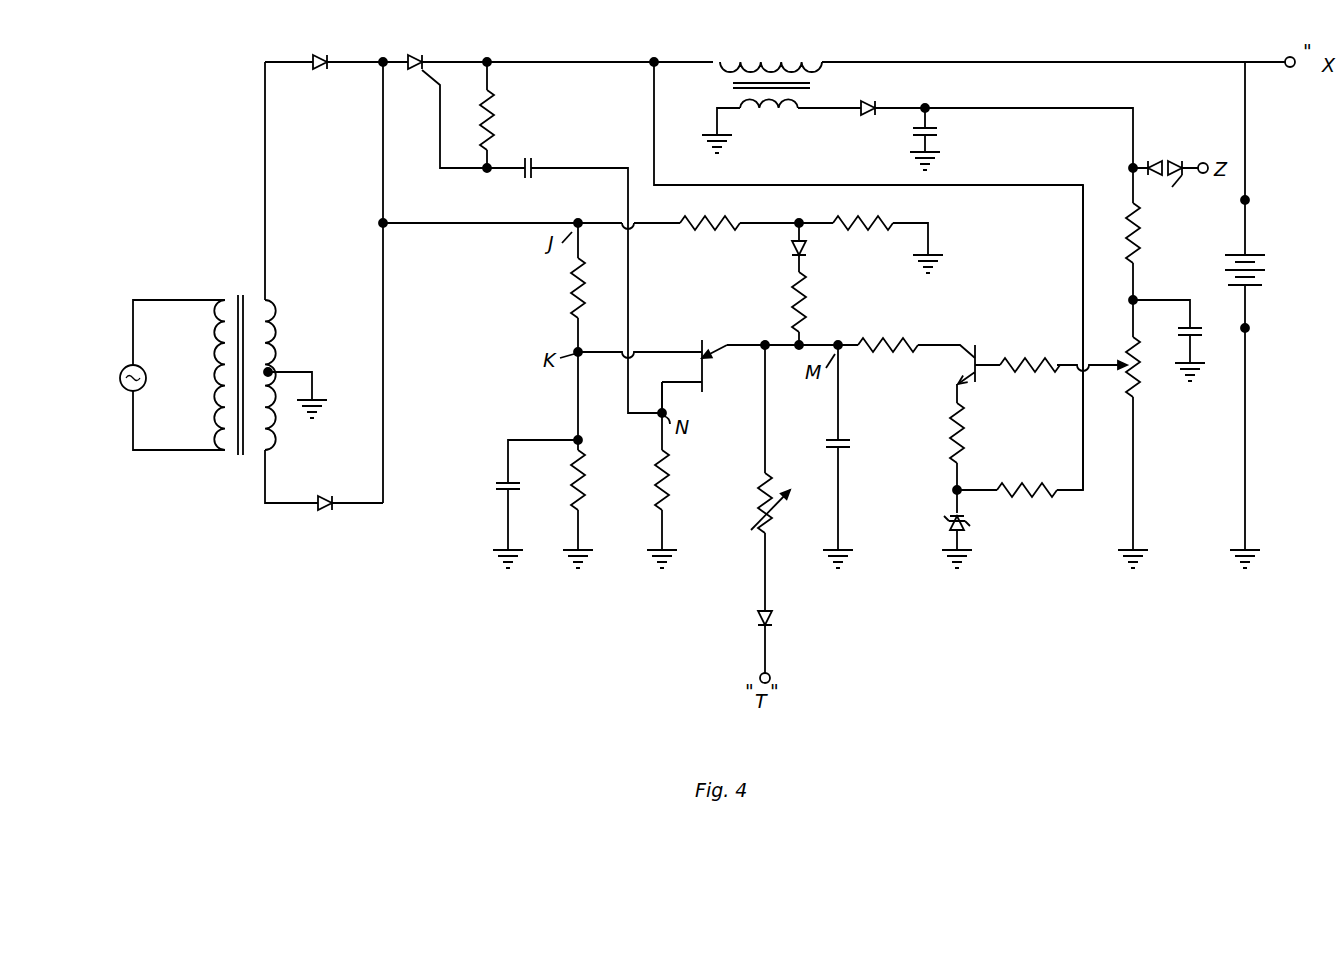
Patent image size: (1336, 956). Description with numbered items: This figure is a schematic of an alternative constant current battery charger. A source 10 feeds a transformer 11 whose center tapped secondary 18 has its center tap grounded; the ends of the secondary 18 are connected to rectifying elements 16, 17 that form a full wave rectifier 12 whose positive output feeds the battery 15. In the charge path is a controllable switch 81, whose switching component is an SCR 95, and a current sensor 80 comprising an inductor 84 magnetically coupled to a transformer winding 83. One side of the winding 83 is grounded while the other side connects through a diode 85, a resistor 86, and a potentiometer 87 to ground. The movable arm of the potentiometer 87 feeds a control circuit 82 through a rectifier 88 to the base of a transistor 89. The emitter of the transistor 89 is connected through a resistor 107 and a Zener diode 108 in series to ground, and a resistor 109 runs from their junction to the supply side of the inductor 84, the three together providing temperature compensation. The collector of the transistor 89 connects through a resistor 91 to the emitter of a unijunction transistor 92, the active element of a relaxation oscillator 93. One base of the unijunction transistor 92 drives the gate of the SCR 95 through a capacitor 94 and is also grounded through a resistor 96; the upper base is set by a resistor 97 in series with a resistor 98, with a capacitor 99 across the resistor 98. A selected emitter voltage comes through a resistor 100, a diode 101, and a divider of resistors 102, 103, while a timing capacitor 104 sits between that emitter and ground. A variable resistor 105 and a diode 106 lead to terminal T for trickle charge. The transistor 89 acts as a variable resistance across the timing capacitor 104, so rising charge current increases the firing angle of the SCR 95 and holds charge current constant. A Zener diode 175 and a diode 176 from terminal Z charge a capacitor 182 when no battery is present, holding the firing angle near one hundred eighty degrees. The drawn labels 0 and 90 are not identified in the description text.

The source 10 is at (146, 367).
The transformer 11 is at (228, 282).
The rectifier 12 is at (350, 354).
The battery 15 is at (1272, 284).
The rectifying element 16 is at (320, 72).
The rectifying element 17 is at (323, 508).
The center tapped secondary 18 is at (277, 310).
The resistor 0 is at (489, 66).
The current sensor 80 is at (836, 160).
The controllable switch 81 is at (528, 54).
The control circuit 82 is at (717, 280).
The transformer winding 83 is at (763, 116).
The inductor 84 is at (762, 70).
The diode 85 is at (864, 102).
The resistor 86 is at (1139, 233).
The potentiometer 87 is at (1136, 402).
The rectifier 88 is at (1042, 359).
The transistor 89 is at (958, 366).
The conductor 90 is at (1024, 275).
The resistor 91 is at (872, 342).
The unijunction transistor 92 is at (698, 364).
The relaxation oscillator 93 is at (737, 395).
The capacitor 94 is at (536, 182).
The SCR 95 is at (413, 73).
The resistor 96 is at (668, 487).
The resistor 97 is at (565, 295).
The resistor 98 is at (585, 466).
The capacitor 99 is at (502, 494).
The resistor 100 is at (806, 316).
The diode 101 is at (810, 254).
The resistor 102 is at (700, 210).
The resistor 103 is at (865, 220).
The timing capacitor 104 is at (846, 450).
The variable resistor 105 is at (778, 520).
The diode 106 is at (773, 628).
The resistor 107 is at (962, 442).
The Zener diode 108 is at (965, 528).
The resistor 109 is at (1018, 495).
The Zener diode 175 is at (1182, 158).
The diode 176 is at (1147, 161).
The capacitor 182 is at (945, 128).